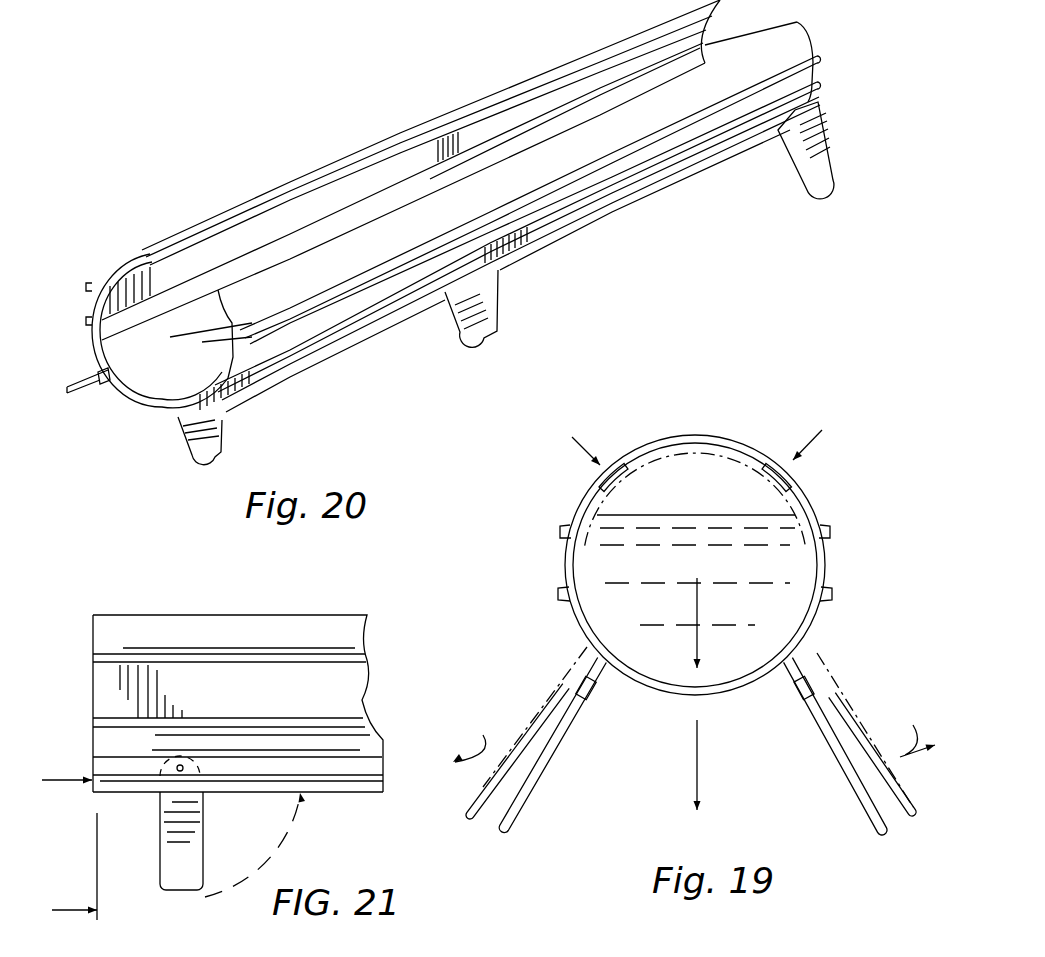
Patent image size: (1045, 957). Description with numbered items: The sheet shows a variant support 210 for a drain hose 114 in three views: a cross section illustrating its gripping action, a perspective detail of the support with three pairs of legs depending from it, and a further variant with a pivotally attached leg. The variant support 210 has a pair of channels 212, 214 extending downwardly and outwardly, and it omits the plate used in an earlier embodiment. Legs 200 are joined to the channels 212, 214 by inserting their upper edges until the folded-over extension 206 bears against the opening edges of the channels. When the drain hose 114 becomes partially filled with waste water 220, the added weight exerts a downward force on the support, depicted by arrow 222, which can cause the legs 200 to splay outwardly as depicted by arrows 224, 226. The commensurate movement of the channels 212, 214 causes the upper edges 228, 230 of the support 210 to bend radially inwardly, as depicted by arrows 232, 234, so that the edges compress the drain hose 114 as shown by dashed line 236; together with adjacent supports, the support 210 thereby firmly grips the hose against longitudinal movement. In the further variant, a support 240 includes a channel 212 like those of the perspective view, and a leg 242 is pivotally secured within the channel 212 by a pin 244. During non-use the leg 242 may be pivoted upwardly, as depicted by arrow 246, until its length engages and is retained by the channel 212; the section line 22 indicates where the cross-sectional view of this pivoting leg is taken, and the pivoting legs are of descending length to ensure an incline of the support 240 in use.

In FIG. 21, the section line 22- 22 is at (68, 839).
In FIG. 19, the drain hose 114 is at (745, 437).
In FIG. 19, the variant leg 200 is at (540, 803).
In FIG. 19, the extension 206 is at (560, 745).
In FIG. 20, the variant support 210 is at (350, 157).
In FIG. 19, the variant support 210 is at (574, 627).
In FIG. 20, the channel 212 is at (220, 419).
In FIG. 19, the channel 212 is at (818, 675).
In FIG. 21, the channel 212 is at (345, 787).
In FIG. 20, the channel 214 is at (110, 384).
In FIG. 19, the channel 214 is at (588, 688).
In FIG. 19, the waste water 220 is at (765, 532).
In FIG. 19, the downward force arrow 222 is at (700, 770).
In FIG. 19, the splaying arrow 224 is at (475, 739).
In FIG. 19, the splaying arrow 226 is at (914, 729).
In FIG. 19, the upper edge of support 228 is at (615, 462).
In FIG. 19, the upper edge of support 230 is at (772, 452).
In FIG. 19, the inward bending arrow 232 is at (582, 450).
In FIG. 19, the inward bending arrow 234 is at (812, 442).
In FIG. 19, the dashed line 236 is at (660, 462).
In FIG. 21, the support 240 is at (195, 615).
In FIG. 21, the leg 242 is at (205, 835).
In FIG. 21, the pin 244 is at (178, 772).
In FIG. 21, the pivot arrow 246 is at (287, 855).